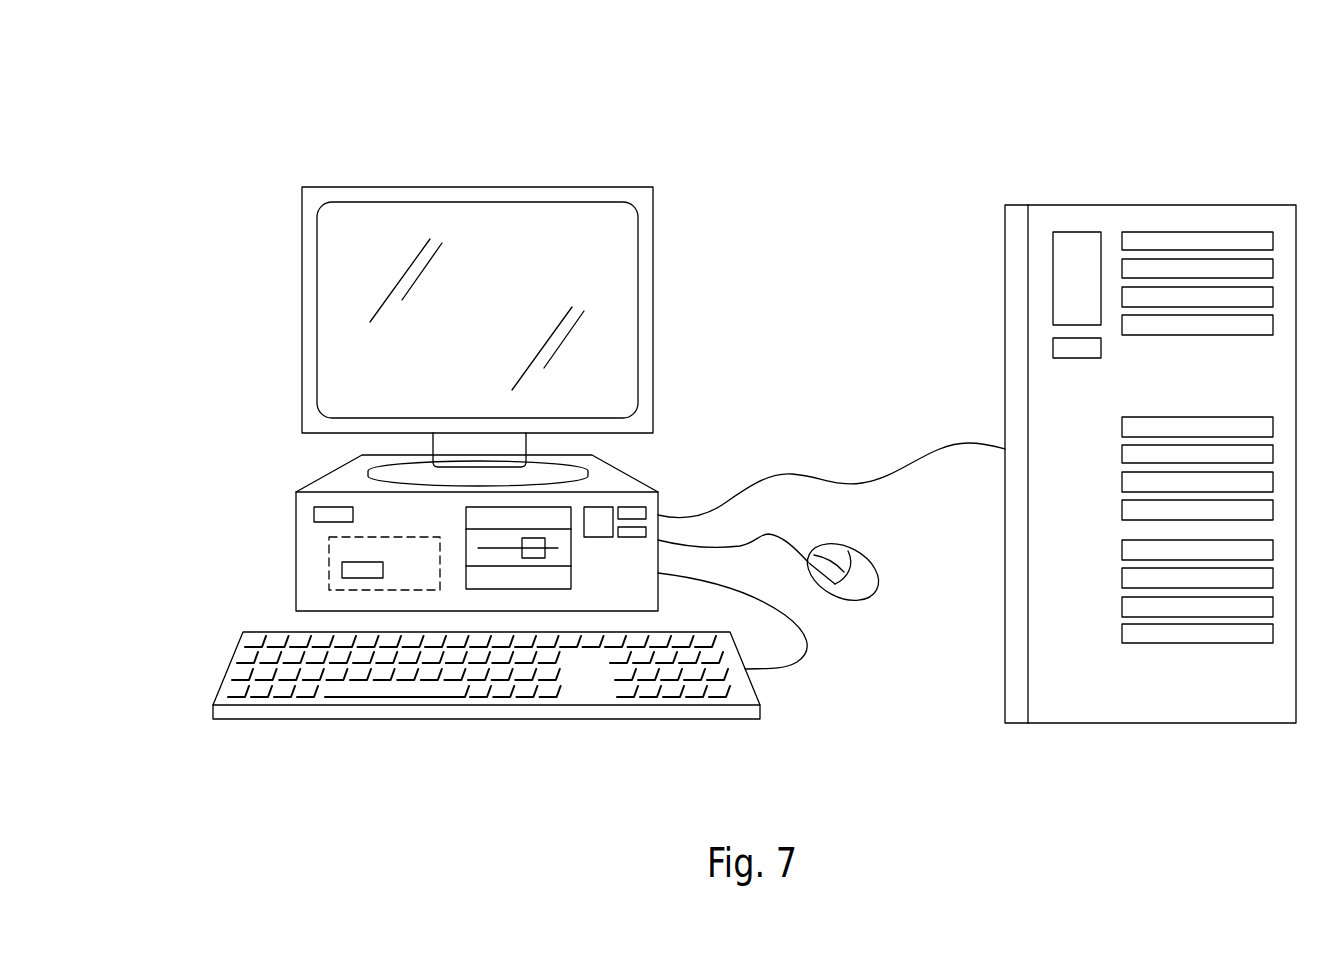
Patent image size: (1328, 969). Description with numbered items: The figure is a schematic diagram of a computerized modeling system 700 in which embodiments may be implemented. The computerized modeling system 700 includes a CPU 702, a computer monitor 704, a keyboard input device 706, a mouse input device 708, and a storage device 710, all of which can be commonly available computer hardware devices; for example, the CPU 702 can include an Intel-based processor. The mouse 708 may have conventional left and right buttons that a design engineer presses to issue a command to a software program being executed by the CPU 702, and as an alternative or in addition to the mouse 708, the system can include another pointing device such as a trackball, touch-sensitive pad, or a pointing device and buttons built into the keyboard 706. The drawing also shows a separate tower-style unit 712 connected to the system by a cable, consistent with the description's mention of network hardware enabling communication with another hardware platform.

The computerized modeling system 700 is at (597, 76).
The CPU 702 is at (343, 568).
The computer monitor 704 is at (600, 258).
The keyboard input device 706 is at (231, 662).
The mouse input device 708 is at (855, 602).
The storage device 710 is at (547, 515).
The server 712 is at (1103, 205).